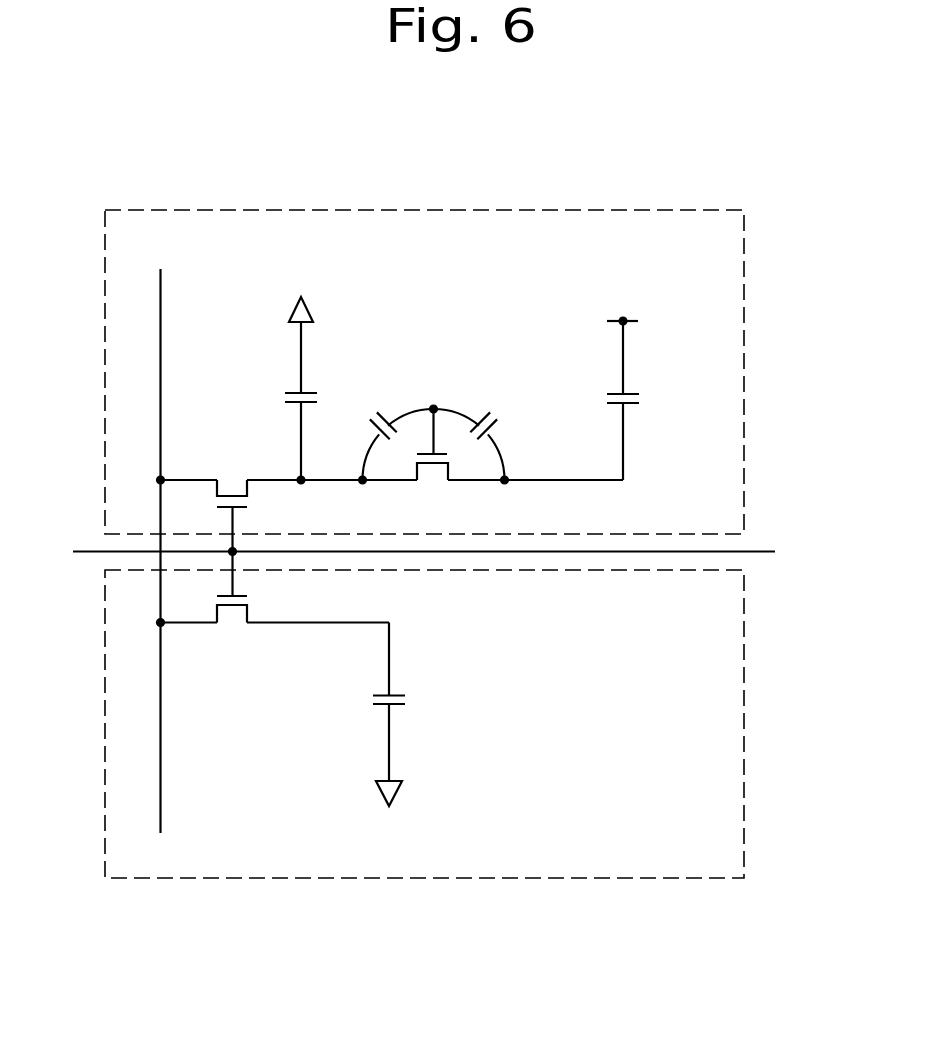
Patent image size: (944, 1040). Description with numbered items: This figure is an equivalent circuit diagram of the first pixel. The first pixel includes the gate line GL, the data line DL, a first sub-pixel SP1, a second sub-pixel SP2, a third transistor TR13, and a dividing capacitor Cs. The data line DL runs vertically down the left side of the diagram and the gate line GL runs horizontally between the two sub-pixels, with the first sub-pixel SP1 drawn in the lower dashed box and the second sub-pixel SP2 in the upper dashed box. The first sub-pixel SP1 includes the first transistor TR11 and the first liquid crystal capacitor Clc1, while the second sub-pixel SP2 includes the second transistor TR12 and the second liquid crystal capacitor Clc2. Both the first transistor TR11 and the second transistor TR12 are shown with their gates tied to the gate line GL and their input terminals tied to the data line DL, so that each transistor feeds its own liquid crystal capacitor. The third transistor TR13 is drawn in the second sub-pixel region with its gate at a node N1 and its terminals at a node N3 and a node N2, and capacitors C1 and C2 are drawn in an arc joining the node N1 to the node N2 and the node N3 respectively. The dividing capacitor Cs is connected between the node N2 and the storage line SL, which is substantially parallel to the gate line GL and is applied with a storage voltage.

The data line DL is at (162, 540).
The gate line GL is at (407, 553).
The storage line SL is at (607, 320).
The first sub-pixel SP1 is at (744, 733).
The second sub-pixel SP2 is at (744, 318).
The first transistor TR11 is at (231, 601).
The second transistor TR12 is at (232, 502).
The third transistor TR13 is at (434, 459).
The first capacitor C1 is at (479, 438).
The second capacitor C2 is at (391, 438).
The dividing capacitor Cs is at (640, 400).
The first liquid crystal capacitor Clc1 is at (418, 715).
The second liquid crystal capacitor Clc2 is at (271, 390).
The first node N1 is at (434, 396).
The second node N2 is at (504, 493).
The third node N3 is at (360, 493).